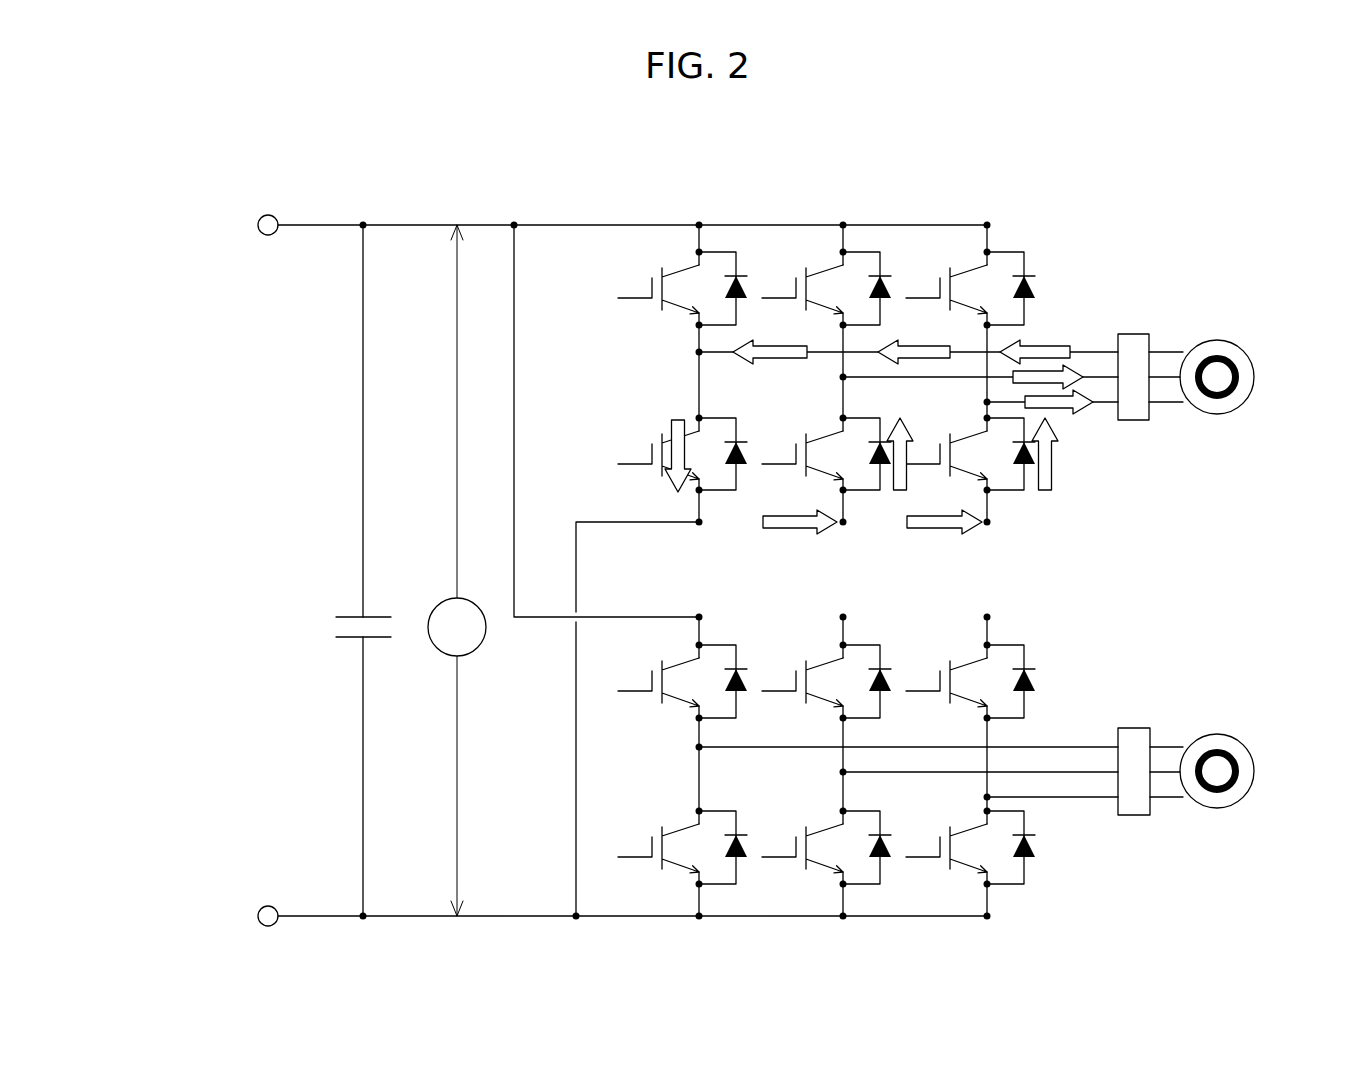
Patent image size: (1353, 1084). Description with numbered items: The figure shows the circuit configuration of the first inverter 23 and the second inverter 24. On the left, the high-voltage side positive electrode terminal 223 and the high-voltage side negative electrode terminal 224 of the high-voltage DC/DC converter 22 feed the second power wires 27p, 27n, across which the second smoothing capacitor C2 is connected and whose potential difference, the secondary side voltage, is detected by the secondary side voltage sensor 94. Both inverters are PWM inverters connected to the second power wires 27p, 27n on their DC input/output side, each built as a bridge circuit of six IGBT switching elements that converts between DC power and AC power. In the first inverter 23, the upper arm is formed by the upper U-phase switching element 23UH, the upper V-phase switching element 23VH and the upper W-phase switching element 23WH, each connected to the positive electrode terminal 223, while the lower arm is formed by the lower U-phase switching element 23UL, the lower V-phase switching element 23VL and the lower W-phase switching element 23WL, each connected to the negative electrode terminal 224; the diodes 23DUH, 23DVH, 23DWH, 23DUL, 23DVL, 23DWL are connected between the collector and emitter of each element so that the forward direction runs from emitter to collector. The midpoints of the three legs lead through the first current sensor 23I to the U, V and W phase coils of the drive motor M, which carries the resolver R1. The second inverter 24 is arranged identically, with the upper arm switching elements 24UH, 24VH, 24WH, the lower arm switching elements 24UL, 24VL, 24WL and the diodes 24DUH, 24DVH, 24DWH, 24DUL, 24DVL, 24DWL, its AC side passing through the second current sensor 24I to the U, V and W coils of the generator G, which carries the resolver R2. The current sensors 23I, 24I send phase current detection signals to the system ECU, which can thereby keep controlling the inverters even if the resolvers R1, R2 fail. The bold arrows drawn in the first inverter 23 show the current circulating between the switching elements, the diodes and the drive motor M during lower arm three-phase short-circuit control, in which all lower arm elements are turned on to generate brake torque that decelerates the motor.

The high-voltage DC/DC converter 22 is at (186, 202).
The high-voltage side positive electrode terminal 223 is at (262, 216).
The high-voltage side negative electrode terminal 224 is at (264, 906).
The second power wire 27p is at (420, 225).
The second power wire 27n is at (420, 916).
The second smoothing capacitor C2 is at (340, 617).
The secondary side voltage sensor 94 is at (448, 604).
The first inverter 23 is at (1112, 187).
The upper U-phase switching element 23UH is at (625, 293).
The upper V-phase switching element 23VH is at (769, 293).
The upper W-phase switching element 23WH is at (913, 293).
The lower U-phase switching element 23UL is at (625, 459).
The lower V-phase switching element 23VL is at (769, 459).
The lower W-phase switching element 23WL is at (913, 459).
The diode 23DUH is at (738, 275).
The diode 23DVH is at (882, 275).
The diode 23DWH is at (1026, 275).
The diode 23DUL is at (739, 468).
The diode 23DVL is at (883, 468).
The diode 23DWL is at (1027, 468).
The first current sensor 23I is at (1155, 325).
The resolver R1 is at (1222, 356).
The drive motor M is at (1235, 403).
The second inverter 24 is at (1112, 572).
The upper U-phase switching element 24UH is at (625, 686).
The upper V-phase switching element 24VH is at (769, 686).
The upper W-phase switching element 24WH is at (913, 686).
The lower U-phase switching element 24UL is at (625, 852).
The lower V-phase switching element 24VL is at (769, 852).
The lower W-phase switching element 24WL is at (913, 852).
The diode 24DUH is at (738, 668).
The diode 24DVH is at (882, 668).
The diode 24DWH is at (1026, 668).
The diode 24DUL is at (739, 862).
The diode 24DVL is at (883, 862).
The diode 24DWL is at (1027, 862).
The second current sensor 24I is at (1140, 728).
The resolver R2 is at (1222, 750).
The generator G is at (1235, 797).